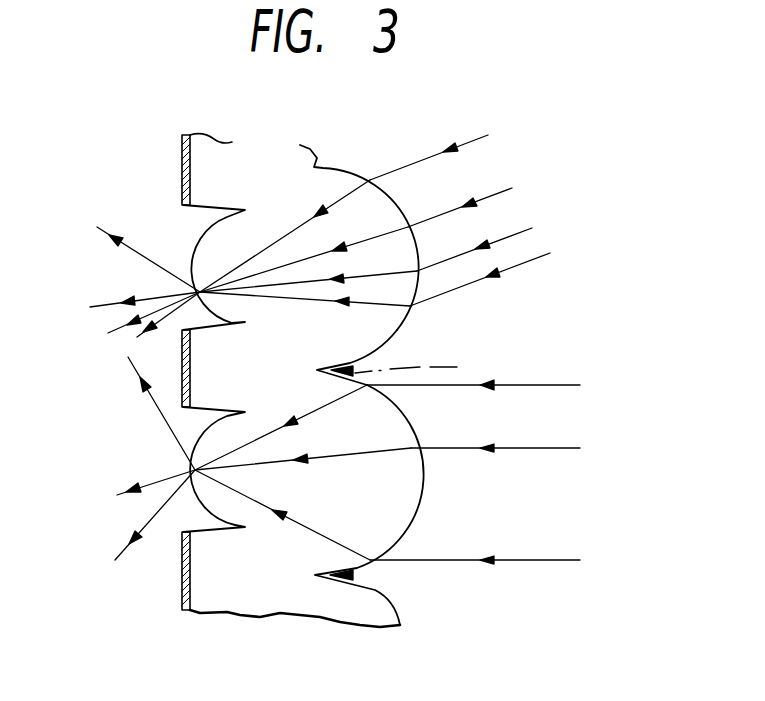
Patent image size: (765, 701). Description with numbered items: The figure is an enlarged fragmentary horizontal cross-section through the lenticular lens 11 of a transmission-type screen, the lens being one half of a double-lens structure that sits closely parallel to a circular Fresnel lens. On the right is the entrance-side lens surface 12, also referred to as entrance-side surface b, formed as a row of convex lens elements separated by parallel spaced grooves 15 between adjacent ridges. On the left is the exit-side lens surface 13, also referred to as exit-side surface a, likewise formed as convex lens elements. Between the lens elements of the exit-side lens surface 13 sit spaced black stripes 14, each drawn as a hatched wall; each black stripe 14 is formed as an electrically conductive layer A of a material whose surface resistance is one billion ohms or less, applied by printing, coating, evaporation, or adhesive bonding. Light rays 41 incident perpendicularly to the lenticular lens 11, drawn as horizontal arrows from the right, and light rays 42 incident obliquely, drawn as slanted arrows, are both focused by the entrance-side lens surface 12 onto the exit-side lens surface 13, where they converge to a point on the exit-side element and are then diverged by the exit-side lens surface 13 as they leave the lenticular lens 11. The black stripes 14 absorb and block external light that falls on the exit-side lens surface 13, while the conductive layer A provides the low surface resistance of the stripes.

The lenticular lens 11 is at (324, 140).
The entrance-side lens surface 12 is at (410, 320).
The exit-side lens surface 13 is at (200, 243).
The black stripe 14 is at (183, 350).
The groove 15 is at (352, 372).
The rays of light incident perpendicularly 41 is at (510, 385).
The rays of light incident obliquely 42 is at (498, 192).
The electrically conductive layer A is at (416, 364).
The exit-side surface a is at (178, 508).
The entrance-side surface b is at (417, 497).